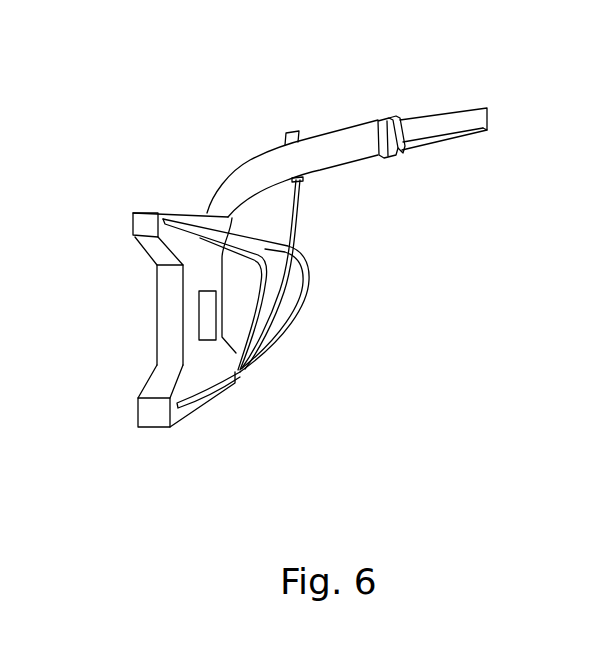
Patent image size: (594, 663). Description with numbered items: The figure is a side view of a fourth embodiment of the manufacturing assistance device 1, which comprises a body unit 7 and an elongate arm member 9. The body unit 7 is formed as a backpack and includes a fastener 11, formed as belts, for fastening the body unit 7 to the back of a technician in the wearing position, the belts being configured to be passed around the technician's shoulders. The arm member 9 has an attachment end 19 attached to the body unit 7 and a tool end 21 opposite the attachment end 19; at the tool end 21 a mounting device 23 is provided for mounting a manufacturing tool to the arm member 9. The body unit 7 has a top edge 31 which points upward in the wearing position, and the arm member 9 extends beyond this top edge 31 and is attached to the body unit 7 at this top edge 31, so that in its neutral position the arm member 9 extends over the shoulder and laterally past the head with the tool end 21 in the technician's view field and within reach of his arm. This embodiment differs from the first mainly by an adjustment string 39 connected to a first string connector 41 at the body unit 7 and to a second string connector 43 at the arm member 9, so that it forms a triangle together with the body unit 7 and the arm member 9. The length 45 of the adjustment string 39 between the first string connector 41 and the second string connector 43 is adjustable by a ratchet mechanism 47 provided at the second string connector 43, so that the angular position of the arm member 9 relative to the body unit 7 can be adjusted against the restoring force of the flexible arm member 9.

The manufacturing assistance device 1 is at (522, 87).
The body unit 7 is at (172, 313).
The arm member 9 is at (246, 175).
The fastener 11 is at (250, 360).
The attachment end 19 is at (207, 216).
The tool end 21 is at (415, 118).
The mounting device 23 is at (455, 130).
The top edge 31 is at (175, 217).
The adjustment string 39 is at (300, 228).
The first string connector 41 is at (240, 374).
The second string connector 43 is at (323, 172).
The length 45 is at (301, 181).
The ratchet mechanism 47 is at (298, 178).